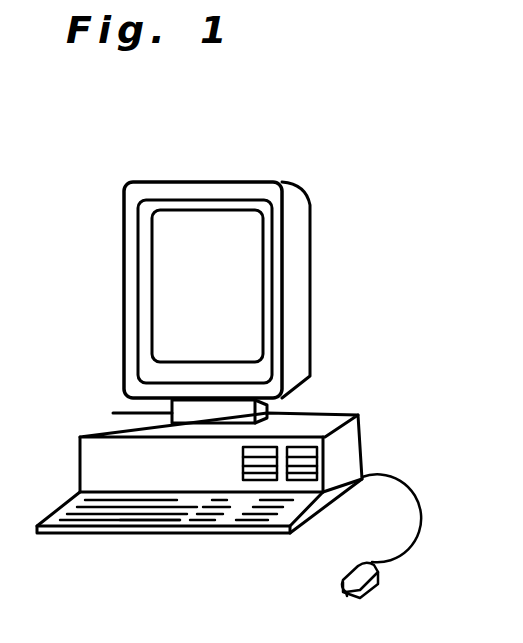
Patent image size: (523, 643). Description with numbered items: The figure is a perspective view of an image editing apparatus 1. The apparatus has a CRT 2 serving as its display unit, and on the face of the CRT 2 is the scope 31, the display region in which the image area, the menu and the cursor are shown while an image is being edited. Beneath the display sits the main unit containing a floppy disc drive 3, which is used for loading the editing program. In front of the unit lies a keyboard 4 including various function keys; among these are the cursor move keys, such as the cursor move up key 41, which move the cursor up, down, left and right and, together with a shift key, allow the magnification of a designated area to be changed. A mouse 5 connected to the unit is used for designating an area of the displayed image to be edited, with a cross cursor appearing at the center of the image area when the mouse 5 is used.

The image editing apparatus 1 is at (328, 165).
The CRT 2 is at (310, 287).
The scope 31 is at (217, 293).
The floppy disc drive 3 is at (318, 462).
The keyboard 4 is at (300, 508).
The cursor move up key 41 is at (215, 517).
The mouse 5 is at (378, 584).